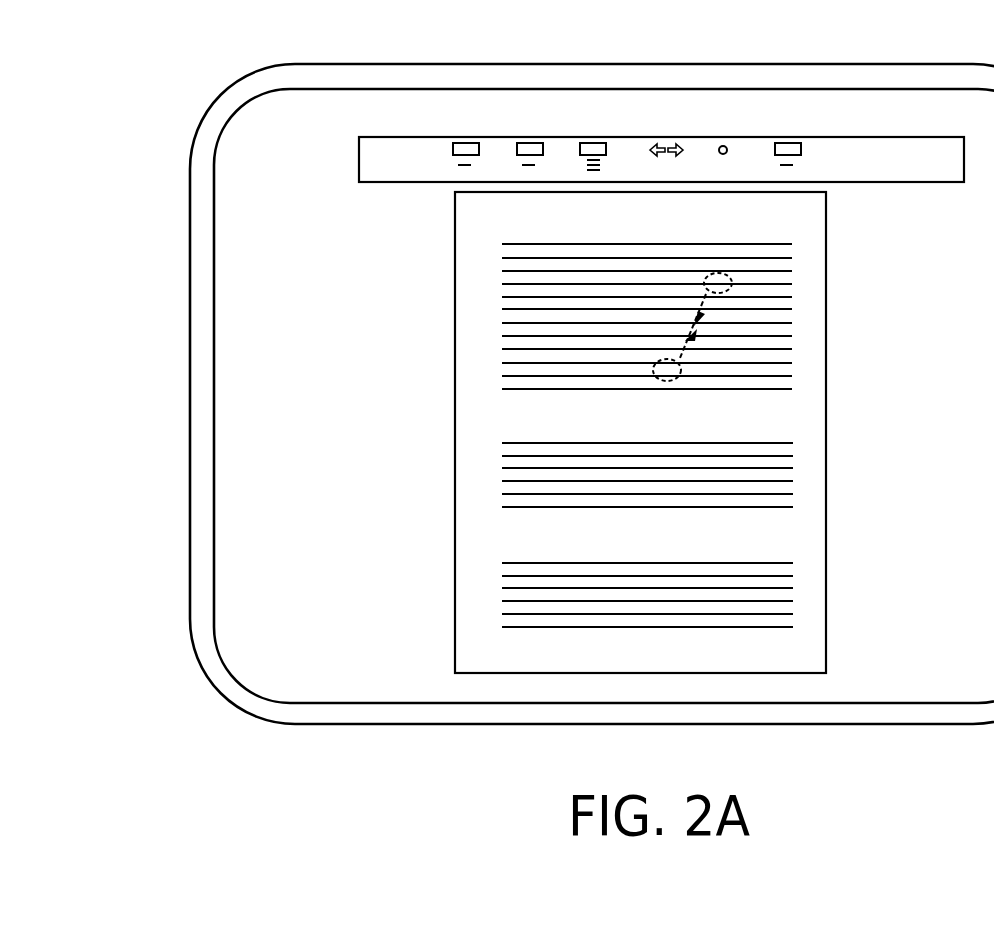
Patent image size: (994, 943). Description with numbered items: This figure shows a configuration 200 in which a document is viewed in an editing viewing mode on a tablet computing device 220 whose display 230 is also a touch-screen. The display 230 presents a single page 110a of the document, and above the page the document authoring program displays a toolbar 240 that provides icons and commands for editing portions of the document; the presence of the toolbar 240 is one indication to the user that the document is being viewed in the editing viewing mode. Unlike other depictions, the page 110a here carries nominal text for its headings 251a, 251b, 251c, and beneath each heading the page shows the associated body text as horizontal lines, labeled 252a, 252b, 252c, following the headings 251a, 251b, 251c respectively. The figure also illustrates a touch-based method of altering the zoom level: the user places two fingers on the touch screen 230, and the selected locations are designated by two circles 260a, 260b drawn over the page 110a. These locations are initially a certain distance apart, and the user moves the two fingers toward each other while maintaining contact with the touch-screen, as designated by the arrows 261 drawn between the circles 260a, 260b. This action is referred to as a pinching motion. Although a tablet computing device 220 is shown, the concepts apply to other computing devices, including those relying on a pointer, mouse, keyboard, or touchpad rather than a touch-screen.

The configuration 200 is at (286, 21).
The tablet computing device 220 is at (190, 220).
The display 230 is at (248, 315).
The toolbar 240 is at (359, 153).
The page 110a is at (826, 240).
The heading 251a is at (517, 218).
The heading 251b is at (517, 412).
The heading 251c is at (515, 533).
The first text section 252a is at (797, 315).
The second text section 252b is at (799, 473).
The third text section 252c is at (802, 602).
The circle 260a is at (704, 278).
The circle 260b is at (667, 382).
The arrows 261 is at (705, 312).